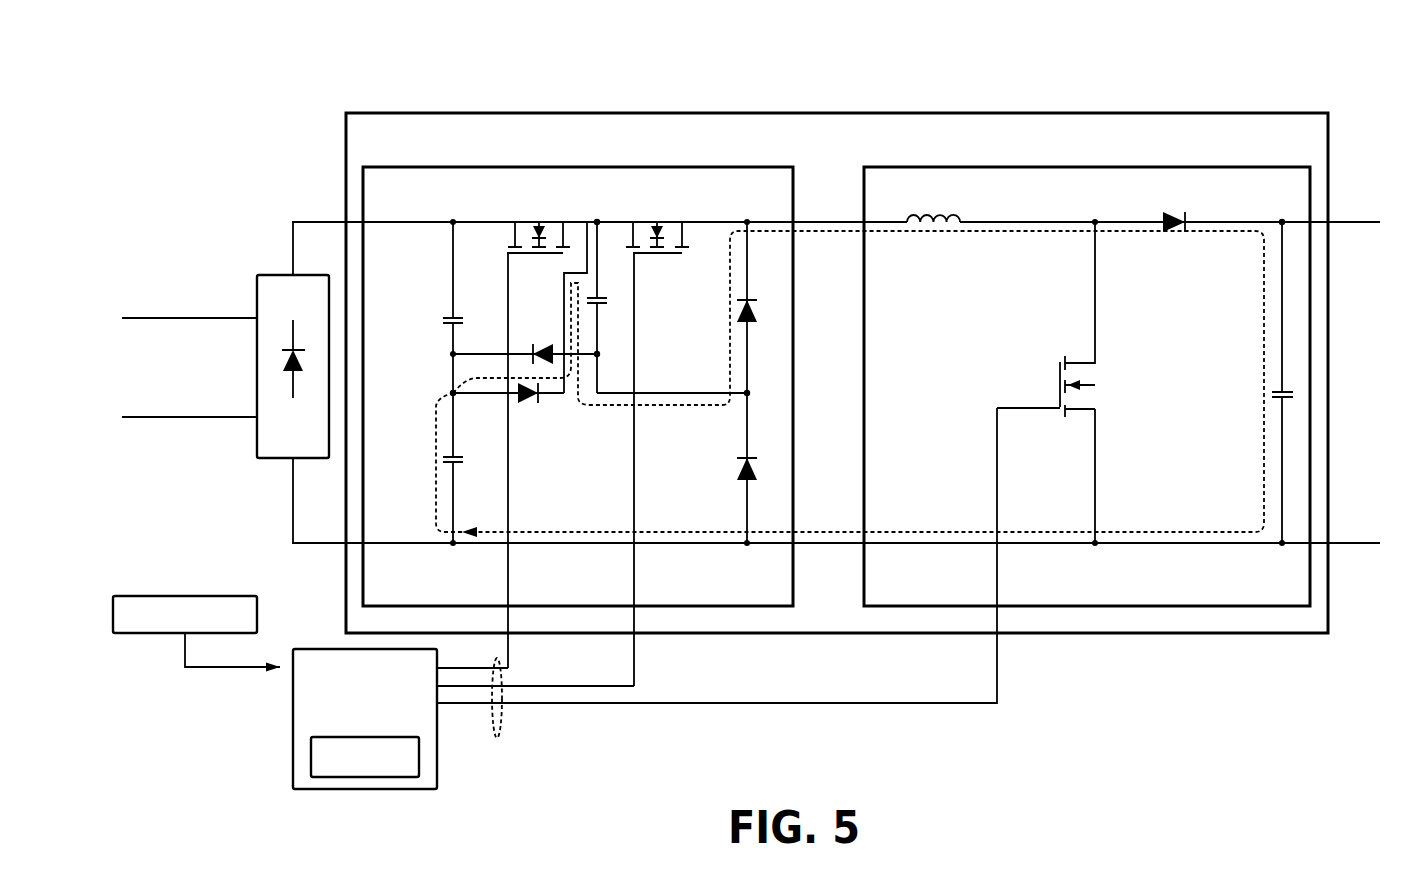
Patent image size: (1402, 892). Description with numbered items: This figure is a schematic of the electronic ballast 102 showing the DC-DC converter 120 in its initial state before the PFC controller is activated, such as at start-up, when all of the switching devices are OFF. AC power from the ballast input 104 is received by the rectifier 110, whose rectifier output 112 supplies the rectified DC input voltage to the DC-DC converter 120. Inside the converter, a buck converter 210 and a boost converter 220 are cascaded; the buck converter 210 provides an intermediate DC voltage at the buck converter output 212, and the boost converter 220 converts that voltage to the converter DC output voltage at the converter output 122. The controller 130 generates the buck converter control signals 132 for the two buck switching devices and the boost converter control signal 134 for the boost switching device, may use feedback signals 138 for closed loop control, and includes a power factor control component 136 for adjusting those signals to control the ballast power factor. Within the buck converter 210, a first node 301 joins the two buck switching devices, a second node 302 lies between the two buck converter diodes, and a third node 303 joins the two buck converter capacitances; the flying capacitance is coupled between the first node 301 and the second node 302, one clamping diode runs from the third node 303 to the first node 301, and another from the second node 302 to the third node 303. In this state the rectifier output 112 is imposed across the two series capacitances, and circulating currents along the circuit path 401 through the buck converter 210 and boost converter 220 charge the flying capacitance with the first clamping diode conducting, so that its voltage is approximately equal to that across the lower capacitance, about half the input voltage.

The electronic ballast 102 is at (168, 75).
The ballast input 104 is at (146, 460).
The rectifier 110 is at (272, 275).
The rectifier output 112 is at (272, 216).
The DC-DC converter 120 is at (346, 140).
The converter output 122 is at (1360, 628).
The controller 130 is at (293, 688).
The buck converter control signals 132 is at (492, 733).
The boost converter control signal 134 is at (609, 705).
The power factor control component 136 is at (311, 758).
The feedback signals 138 is at (182, 596).
The buck converter 210 is at (363, 186).
The buck converter output 212 is at (825, 594).
The boost converter 220 is at (864, 190).
The first node 301 is at (598, 222).
The second node 302 is at (746, 397).
The third node 303 is at (452, 392).
The circuit path 401 is at (436, 474).